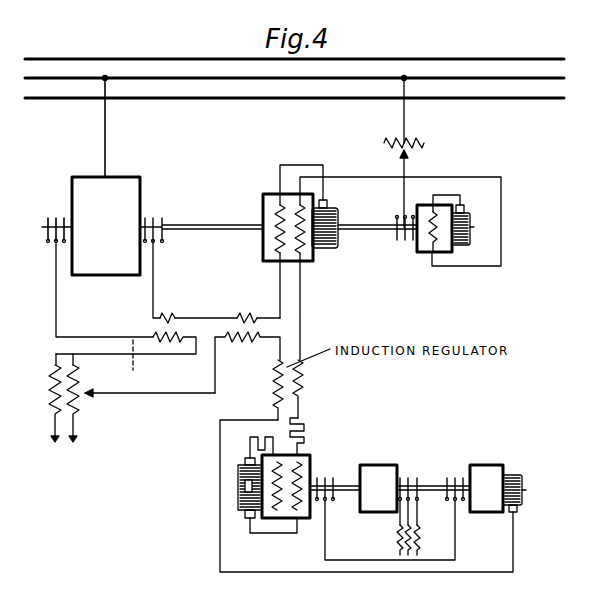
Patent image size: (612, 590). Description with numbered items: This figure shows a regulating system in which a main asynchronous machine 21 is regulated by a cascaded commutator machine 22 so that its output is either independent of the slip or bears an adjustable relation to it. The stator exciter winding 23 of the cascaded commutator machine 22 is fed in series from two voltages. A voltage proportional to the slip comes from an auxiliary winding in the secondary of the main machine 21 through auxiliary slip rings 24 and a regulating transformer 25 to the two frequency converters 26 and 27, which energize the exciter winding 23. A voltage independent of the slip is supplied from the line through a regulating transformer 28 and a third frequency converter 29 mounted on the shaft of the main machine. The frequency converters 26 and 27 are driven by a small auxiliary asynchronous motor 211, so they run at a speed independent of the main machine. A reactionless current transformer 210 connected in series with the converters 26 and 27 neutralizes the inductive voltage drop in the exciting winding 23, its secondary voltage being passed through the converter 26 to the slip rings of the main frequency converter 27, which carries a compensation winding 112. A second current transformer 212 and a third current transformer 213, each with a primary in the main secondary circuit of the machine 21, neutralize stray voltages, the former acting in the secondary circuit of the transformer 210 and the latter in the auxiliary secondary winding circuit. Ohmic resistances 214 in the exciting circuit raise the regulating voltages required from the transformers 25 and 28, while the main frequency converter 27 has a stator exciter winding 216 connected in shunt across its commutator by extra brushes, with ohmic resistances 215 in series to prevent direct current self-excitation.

The main asynchronous machine 21 is at (138, 190).
The cascaded commutator machine 22 is at (263, 201).
The stator exciter winding 23 is at (314, 250).
The auxiliary slip rings 24 is at (56, 218).
The regulating transformer 25 is at (48, 390).
The frequency converter 26 is at (486, 513).
The main frequency converter 27 is at (301, 514).
The regulating transformer 28 is at (414, 147).
The third frequency converter 29 is at (421, 252).
The reactionless current transformer 210 is at (302, 387).
The auxiliary asynchronous motor 211 is at (375, 513).
The second current transformer 212 is at (236, 345).
The third current transformer 213 is at (176, 345).
The ohmic resistances 214 is at (307, 432).
The ohmic resistances 215 is at (252, 442).
The stator exciter winding 216 is at (281, 503).
The compensation winding 112 is at (299, 505).